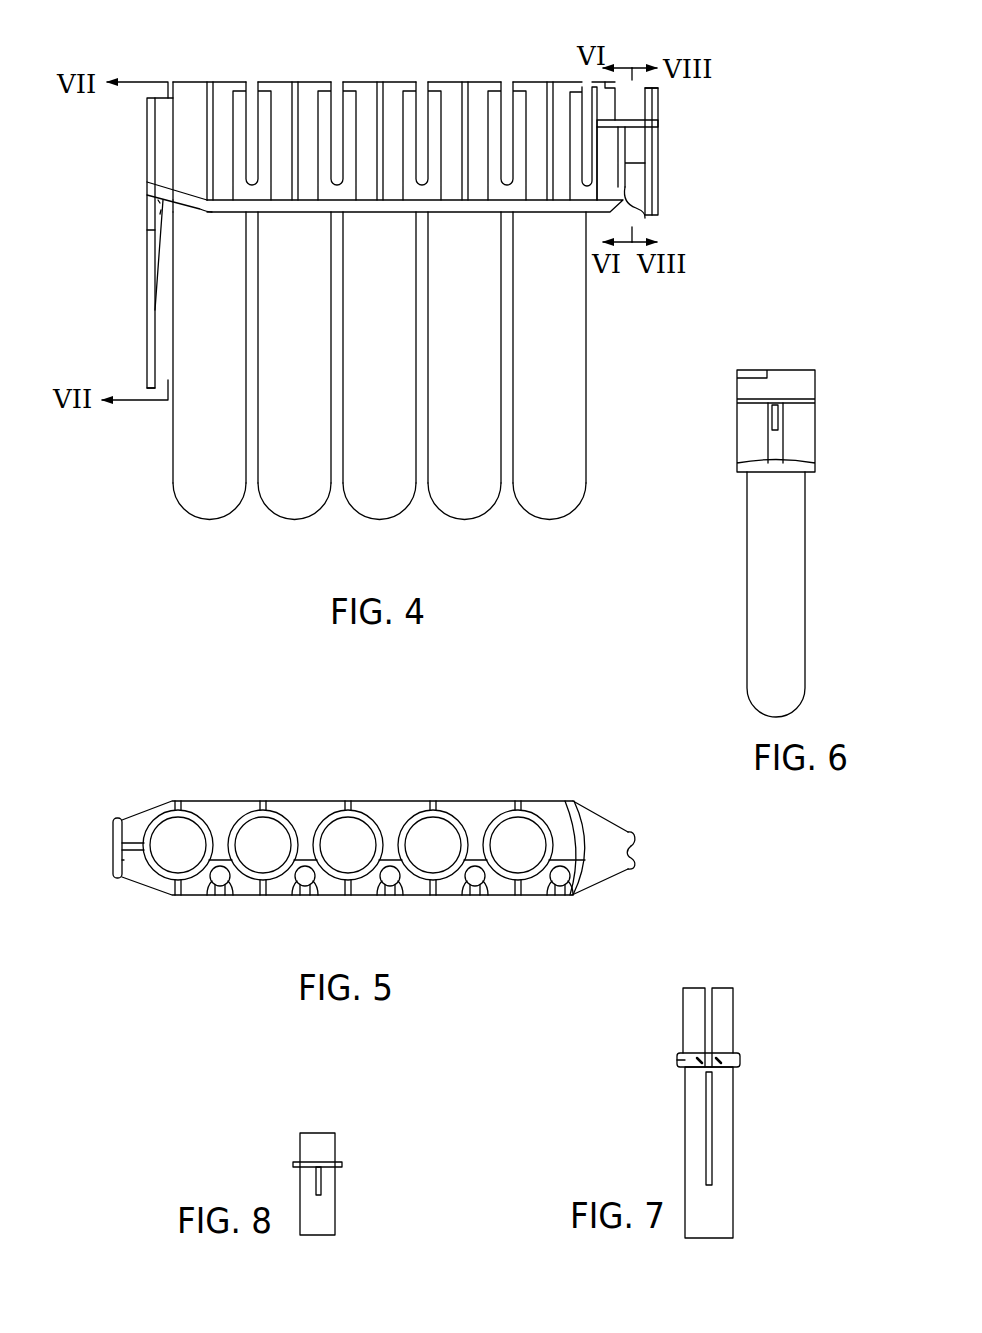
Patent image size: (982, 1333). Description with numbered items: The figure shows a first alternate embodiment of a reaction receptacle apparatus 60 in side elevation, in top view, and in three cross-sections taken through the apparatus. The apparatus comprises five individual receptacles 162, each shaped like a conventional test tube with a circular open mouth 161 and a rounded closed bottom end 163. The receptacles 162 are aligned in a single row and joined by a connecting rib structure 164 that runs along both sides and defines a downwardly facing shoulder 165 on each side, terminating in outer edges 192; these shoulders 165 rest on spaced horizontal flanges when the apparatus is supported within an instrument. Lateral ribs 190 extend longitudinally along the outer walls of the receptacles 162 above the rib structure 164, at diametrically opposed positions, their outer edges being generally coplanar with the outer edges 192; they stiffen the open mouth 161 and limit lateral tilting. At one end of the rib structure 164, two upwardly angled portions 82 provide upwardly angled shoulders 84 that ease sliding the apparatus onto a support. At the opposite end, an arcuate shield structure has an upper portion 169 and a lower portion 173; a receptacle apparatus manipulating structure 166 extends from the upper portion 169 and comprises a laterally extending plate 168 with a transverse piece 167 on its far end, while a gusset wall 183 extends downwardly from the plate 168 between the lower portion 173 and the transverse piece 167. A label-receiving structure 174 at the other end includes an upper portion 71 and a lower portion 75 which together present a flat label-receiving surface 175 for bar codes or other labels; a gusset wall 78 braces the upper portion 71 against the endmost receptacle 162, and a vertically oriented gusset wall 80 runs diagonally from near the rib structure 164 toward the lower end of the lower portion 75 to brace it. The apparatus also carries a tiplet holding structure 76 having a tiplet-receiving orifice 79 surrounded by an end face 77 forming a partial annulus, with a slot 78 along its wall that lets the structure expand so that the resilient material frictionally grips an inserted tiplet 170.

In FIG. 4, the reaction receptacle apparatus 60 is at (670, 44).
In FIG. 5, the reaction receptacle apparatus 60 is at (598, 784).
In FIG. 4, the upper portion 71 is at (147, 140).
In FIG. 5, the upper portion 71 is at (113, 832).
In FIG. 4, the lower portion 75 is at (150, 274).
In FIG. 7, the lower portion 75 is at (718, 1213).
In FIG. 4, the tiplet holding structure 76 is at (358, 108).
In FIG. 5, the tiplet holding structure 76 is at (291, 886).
In FIG. 7, the tiplet holding structure 76 is at (705, 1025).
In FIG. 5, the end face 77 is at (323, 883).
In FIG. 4, the slot 78 is at (165, 108).
In FIG. 5, the slot 78 is at (135, 840).
In FIG. 5, the tiplet-receiving orifice 79 is at (222, 878).
In FIG. 4, the gusset wall 80 is at (160, 213).
In FIG. 7, the gusset wall 80 is at (712, 1125).
In FIG. 4, the upwardly angled portions 82 is at (157, 193).
In FIG. 7, the upwardly angled portions 82 is at (740, 1063).
In FIG. 4, the upwardly angled shoulders 84 is at (160, 202).
In FIG. 4, the open mouth 161 is at (308, 82).
In FIG. 5, the open mouth 161 is at (187, 835).
In FIG. 4, the receptacles 162 is at (217, 521).
In FIG. 5, the receptacles 162 is at (145, 872).
In FIG. 4, the rounded closed bottom end 163 is at (188, 510).
In FIG. 4, the connecting rib structure 164 is at (538, 217).
In FIG. 5, the connecting rib structure 164 is at (545, 808).
In FIG. 6, the connecting rib structure 164 is at (782, 472).
In FIG. 7, the connecting rib structure 164 is at (676, 1060).
In FIG. 4, the downwardly facing shoulder 165 is at (222, 213).
In FIG. 4, the receptacle apparatus manipulating structure 166 is at (672, 116).
In FIG. 5, the receptacle apparatus manipulating structure 166 is at (636, 834).
In FIG. 4, the transverse piece 167 is at (662, 207).
In FIG. 5, the transverse piece 167 is at (629, 855).
In FIG. 8, the transverse piece 167 is at (315, 1142).
In FIG. 4, the laterally extending plate 168 is at (643, 118).
In FIG. 5, the laterally extending plate 168 is at (607, 818).
In FIG. 6, the laterally extending plate 168 is at (775, 403).
In FIG. 8, the laterally extending plate 168 is at (318, 1163).
In FIG. 4, the upper portion 169 is at (615, 90).
In FIG. 6, the tiplet 170 is at (780, 422).
In FIG. 8, the tiplet 170 is at (322, 1187).
In FIG. 4, the lower portion 173 is at (640, 212).
In FIG. 4, the label-receiving structure 174 is at (142, 232).
In FIG. 5, the label-receiving structure 174 is at (108, 865).
In FIG. 4, the label-receiving surface 175 is at (147, 355).
In FIG. 4, the gusset wall 183 is at (640, 152).
In FIG. 4, the lateral ribs 190 is at (210, 88).
In FIG. 5, the lateral ribs 190 is at (433, 805).
In FIG. 5, the outer edges 192 is at (380, 802).